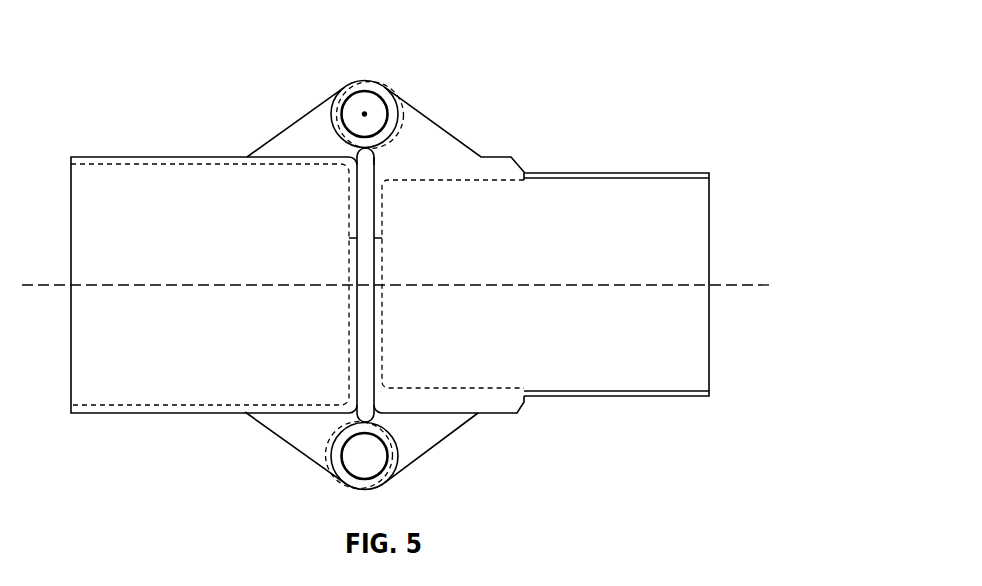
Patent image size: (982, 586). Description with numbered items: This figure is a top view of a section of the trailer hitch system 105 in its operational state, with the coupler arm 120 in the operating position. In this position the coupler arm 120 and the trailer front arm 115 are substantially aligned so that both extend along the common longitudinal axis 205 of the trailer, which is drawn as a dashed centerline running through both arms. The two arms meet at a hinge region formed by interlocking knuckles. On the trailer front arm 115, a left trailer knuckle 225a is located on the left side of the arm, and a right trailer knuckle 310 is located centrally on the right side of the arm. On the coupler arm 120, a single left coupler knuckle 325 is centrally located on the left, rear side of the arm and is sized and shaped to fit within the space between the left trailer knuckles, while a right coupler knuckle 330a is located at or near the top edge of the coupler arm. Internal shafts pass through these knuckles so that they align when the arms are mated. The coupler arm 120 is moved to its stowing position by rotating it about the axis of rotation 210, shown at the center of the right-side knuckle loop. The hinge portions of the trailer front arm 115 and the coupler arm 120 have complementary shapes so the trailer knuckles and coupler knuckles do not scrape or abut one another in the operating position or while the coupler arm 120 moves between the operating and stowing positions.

The trailer hitch system 105 is at (155, 52).
The trailer front arm 115 is at (170, 185).
The coupler arm 120 is at (588, 193).
The longitudinal axis 205 is at (747, 285).
The axis of rotation 210 is at (365, 113).
The right trailer knuckle 310 is at (312, 125).
The right coupler knuckle 330a is at (415, 125).
The left trailer knuckle 225a is at (311, 441).
The left coupler knuckle 325 is at (415, 441).